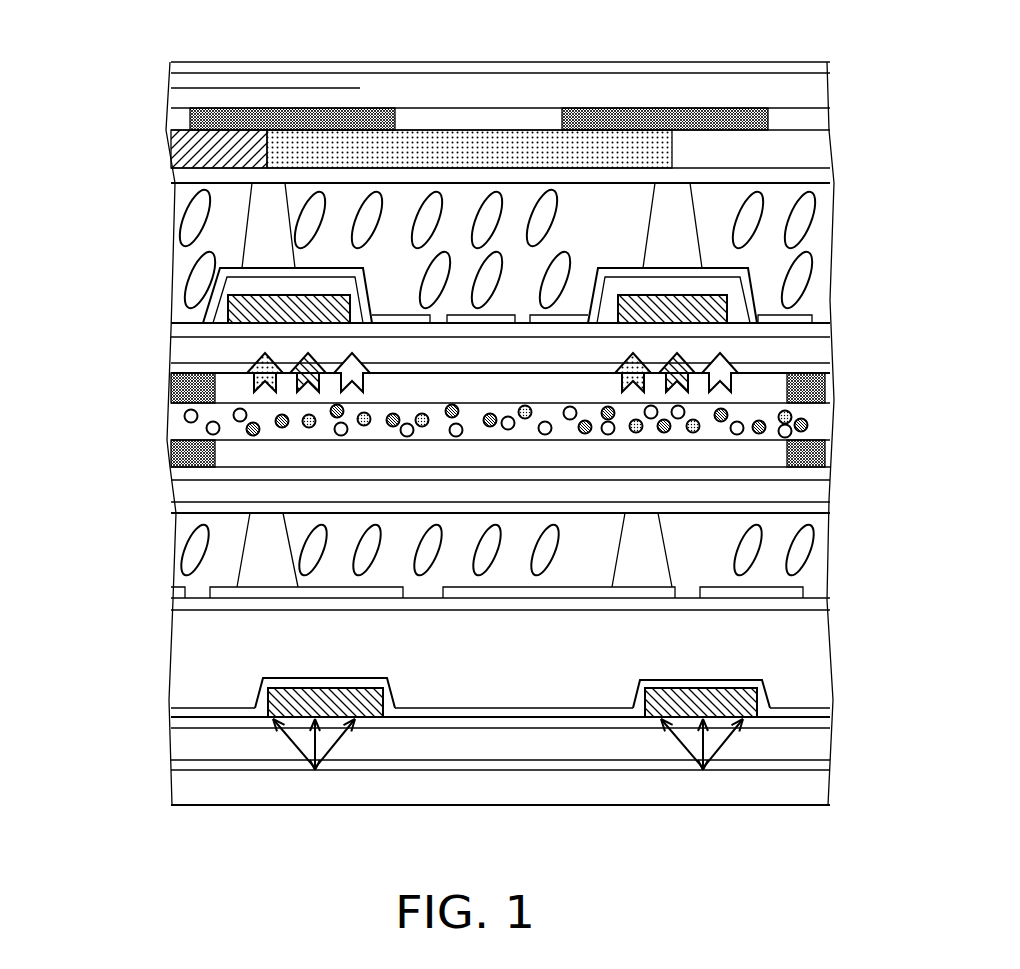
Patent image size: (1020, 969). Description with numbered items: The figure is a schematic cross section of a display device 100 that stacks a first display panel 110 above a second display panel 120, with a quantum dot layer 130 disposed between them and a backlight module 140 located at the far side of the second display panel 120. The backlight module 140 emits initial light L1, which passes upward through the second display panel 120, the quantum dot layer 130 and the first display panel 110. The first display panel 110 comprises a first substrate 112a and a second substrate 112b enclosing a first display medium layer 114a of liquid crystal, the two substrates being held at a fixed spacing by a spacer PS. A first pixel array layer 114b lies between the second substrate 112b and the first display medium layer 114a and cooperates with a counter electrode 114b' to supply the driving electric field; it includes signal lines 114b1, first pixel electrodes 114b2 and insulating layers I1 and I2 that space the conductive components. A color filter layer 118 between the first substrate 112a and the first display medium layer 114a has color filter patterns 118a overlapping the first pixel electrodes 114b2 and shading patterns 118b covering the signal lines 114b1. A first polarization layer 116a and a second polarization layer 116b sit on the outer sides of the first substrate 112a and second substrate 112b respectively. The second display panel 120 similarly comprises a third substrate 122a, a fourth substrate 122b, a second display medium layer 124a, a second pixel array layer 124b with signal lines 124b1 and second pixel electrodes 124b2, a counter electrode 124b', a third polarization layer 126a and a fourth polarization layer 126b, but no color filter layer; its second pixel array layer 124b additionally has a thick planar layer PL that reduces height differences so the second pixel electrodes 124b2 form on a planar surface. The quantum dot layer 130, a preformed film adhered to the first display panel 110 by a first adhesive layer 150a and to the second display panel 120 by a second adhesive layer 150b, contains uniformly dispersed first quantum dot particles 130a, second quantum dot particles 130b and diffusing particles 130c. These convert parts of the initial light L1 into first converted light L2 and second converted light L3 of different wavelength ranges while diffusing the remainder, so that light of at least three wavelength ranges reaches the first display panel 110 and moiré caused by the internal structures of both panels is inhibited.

The first polarization layer 116a is at (178, 70).
The first substrate 112a is at (178, 88).
The color filter layer 118 is at (98, 85).
The shading patterns 118b is at (215, 109).
The color filter patterns 118a is at (300, 150).
The counter electrode 114b' is at (446, 176).
The first display medium layer 114a is at (430, 216).
The first display panel 110 is at (58, 5).
The insulating layer I2 is at (235, 282).
The signal lines 114b1 is at (250, 308).
The first pixel array layer 114b is at (445, 299).
The insulating layer I1 is at (190, 330).
The first pixel electrodes 114b2 is at (477, 318).
The second substrate 112b is at (180, 363).
The second polarization layer 116b is at (180, 375).
The fourth polarization layer 126b is at (178, 468).
The fourth substrate 122b is at (180, 490).
The counter electrode 124b' is at (445, 541).
The second display medium layer 124a is at (367, 552).
The second display panel 120 is at (58, 470).
The second pixel electrodes 124b2 is at (480, 595).
The second pixel array layer 124b is at (444, 671).
The signal lines 124b1 is at (290, 700).
The third substrate 122a is at (192, 743).
The third polarization layer 126a is at (187, 765).
The spacer PS is at (680, 220).
The second converted light L3 is at (633, 362).
The first converted light L2 is at (677, 362).
The initial light L1 is at (720, 362).
The first adhesive layer 150a is at (808, 390).
The second quantum dot particles 130b is at (790, 416).
The first quantum dot particles 130a is at (806, 425).
The diffusing particles 130c is at (790, 431).
The quantum dot layer 130 is at (882, 372).
The second adhesive layer 150b is at (822, 455).
The planar layer PL is at (813, 670).
The backlight module 140 is at (815, 790).
The display device 100 is at (906, 841).